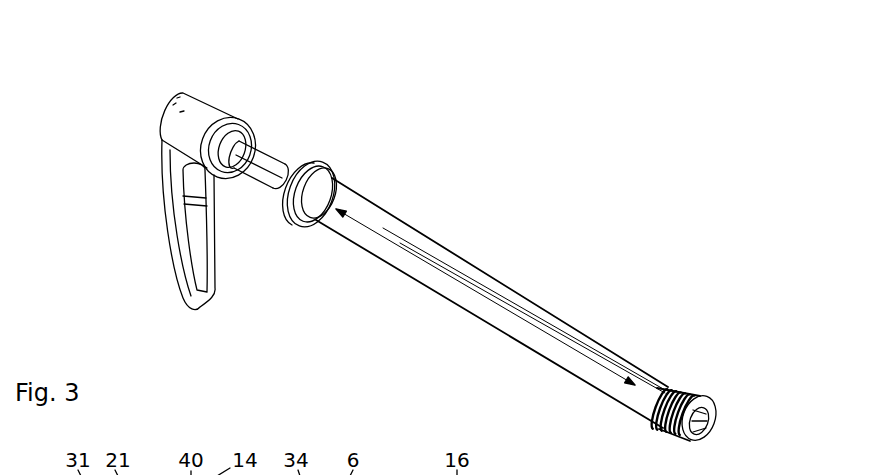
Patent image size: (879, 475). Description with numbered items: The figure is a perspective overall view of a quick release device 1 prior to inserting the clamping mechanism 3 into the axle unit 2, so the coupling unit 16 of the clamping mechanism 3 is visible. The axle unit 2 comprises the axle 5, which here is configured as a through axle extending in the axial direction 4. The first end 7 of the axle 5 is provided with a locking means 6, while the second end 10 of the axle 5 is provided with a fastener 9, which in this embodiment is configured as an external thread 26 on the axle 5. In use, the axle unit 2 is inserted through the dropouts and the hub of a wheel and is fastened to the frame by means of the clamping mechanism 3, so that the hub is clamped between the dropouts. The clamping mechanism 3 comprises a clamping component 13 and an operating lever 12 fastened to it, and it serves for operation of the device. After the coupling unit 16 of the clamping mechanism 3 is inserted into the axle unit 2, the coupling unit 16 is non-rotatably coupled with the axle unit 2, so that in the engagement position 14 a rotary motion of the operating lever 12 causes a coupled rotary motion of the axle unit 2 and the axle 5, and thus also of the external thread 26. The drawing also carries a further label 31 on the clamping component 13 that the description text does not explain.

The quick release device 1 is at (647, 187).
The axle unit 2 is at (400, 172).
The clamping mechanism 3 is at (293, 110).
The axial direction 4 is at (458, 281).
The axle 5 is at (562, 318).
The locking means 6 is at (295, 238).
The first end 7 is at (348, 180).
The fastener 9 is at (660, 442).
The second end 10 is at (713, 397).
The operating lever 12 is at (167, 238).
The clamping component 13 is at (240, 128).
The engagement position 14 is at (135, 120).
The coupling unit 16 is at (257, 184).
The external thread 26 is at (667, 432).
The cam body 31 is at (197, 101).